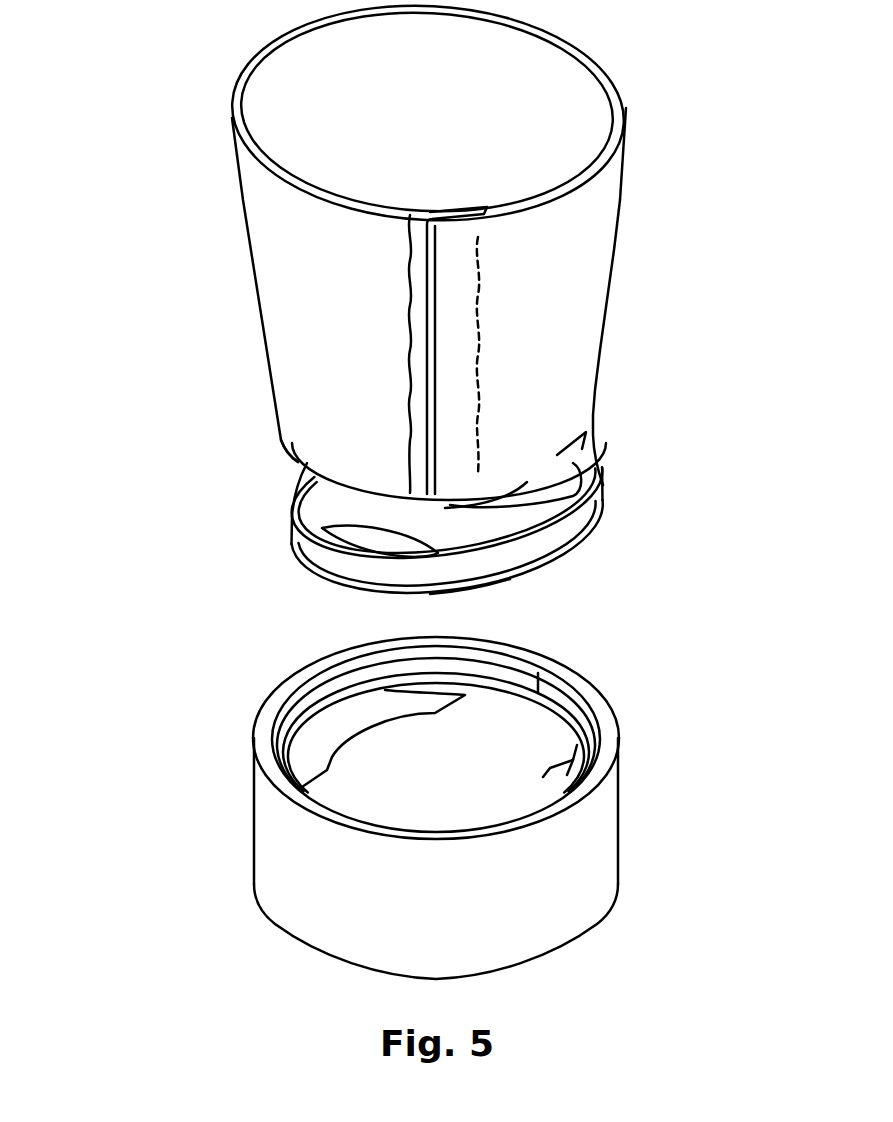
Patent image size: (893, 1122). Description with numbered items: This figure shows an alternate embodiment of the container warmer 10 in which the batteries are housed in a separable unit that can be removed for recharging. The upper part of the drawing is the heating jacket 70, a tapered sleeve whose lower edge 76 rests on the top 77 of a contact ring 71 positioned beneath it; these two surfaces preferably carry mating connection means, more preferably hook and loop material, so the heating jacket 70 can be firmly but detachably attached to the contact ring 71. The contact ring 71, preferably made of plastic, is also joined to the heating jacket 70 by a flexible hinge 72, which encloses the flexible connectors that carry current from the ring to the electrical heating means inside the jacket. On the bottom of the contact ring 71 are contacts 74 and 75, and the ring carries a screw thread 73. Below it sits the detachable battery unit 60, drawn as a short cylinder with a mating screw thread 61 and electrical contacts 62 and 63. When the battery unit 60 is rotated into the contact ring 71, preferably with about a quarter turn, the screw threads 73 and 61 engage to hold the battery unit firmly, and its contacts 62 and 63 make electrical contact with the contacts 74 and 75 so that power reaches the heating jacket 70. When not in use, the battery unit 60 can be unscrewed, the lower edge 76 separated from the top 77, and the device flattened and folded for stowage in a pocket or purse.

The beverage container assembly 10 is at (140, 290).
The battery unit 60 is at (254, 830).
The mating screw thread 61 is at (540, 688).
The electrical contact 62 is at (577, 760).
The electrical contact 63 is at (333, 730).
The heating jacket 70 is at (593, 234).
The contact ring 71 is at (550, 557).
The flexible hinge 72 is at (592, 452).
The screw thread 73 is at (467, 580).
The contact 74 is at (357, 540).
The contact 75 is at (540, 498).
The lower edge of heating jacket 76 is at (290, 447).
The top of contact ring 77 is at (293, 484).